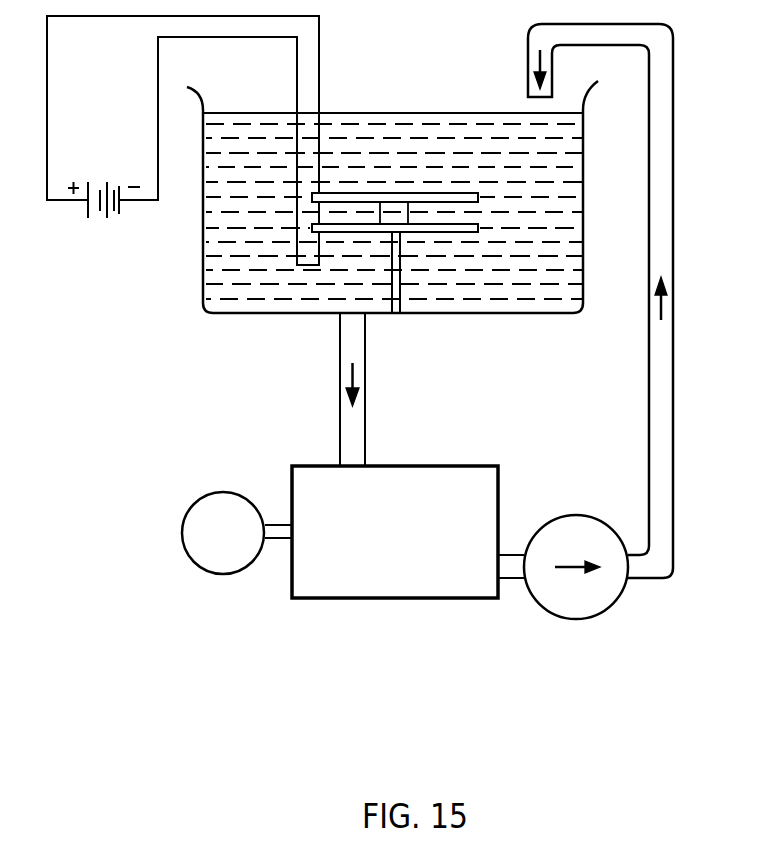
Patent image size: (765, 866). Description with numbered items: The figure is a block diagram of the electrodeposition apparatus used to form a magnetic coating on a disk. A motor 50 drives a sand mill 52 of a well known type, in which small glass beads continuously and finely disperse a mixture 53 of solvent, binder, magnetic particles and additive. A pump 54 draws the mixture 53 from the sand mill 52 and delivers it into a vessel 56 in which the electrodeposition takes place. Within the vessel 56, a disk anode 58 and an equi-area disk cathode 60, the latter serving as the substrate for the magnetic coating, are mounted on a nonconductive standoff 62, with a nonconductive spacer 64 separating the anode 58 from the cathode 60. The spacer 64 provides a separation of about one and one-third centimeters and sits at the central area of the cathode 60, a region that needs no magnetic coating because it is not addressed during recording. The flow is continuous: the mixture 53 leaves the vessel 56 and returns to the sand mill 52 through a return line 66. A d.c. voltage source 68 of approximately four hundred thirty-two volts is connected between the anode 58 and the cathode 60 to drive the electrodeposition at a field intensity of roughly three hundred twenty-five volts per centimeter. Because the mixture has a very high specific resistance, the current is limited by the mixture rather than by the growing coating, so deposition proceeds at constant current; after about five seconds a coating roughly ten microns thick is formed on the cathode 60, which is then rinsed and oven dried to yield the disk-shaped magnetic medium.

The motor 50 is at (182, 538).
The sand mill 52 is at (360, 600).
The mixture 53 is at (442, 138).
The pump 54 is at (568, 620).
The vessel 56 is at (203, 305).
The disk anode 58 is at (350, 193).
The disk cathode 60 is at (343, 232).
The nonconductive standoff 62 is at (398, 268).
The nonconductive spacer 64 is at (395, 213).
The return line 66 is at (360, 418).
The d.c. voltage source 68 is at (110, 218).